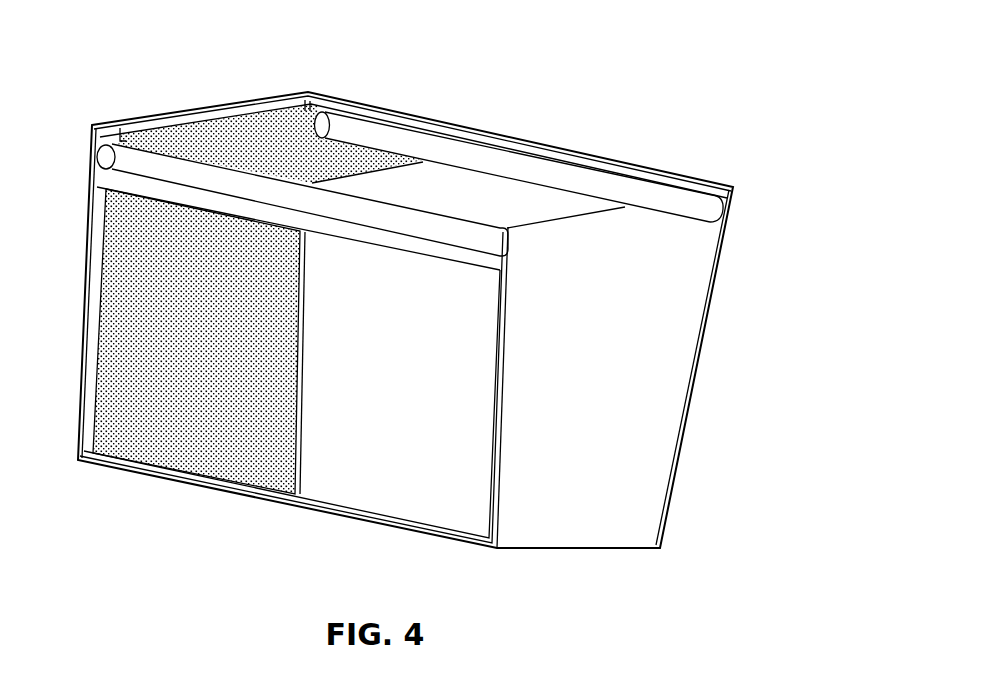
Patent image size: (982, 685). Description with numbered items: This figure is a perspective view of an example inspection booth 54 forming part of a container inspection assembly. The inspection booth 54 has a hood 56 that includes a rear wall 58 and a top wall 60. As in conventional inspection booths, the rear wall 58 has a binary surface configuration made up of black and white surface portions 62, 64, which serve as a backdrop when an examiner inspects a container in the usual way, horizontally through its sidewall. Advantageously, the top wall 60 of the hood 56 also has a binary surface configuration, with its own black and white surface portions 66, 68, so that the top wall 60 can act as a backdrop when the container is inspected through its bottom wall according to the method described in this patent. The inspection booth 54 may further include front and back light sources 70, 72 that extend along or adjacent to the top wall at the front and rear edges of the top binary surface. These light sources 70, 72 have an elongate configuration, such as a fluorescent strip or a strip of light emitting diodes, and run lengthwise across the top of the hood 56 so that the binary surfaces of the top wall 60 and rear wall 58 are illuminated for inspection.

The inspection booth 54 is at (767, 62).
The hood 56 is at (648, 362).
The rear wall 58 is at (432, 502).
The top wall 60 is at (268, 107).
The black surface portion 62 is at (230, 462).
The white surface portion 64 is at (340, 485).
The black surface portion 66 is at (363, 160).
The white surface portion 68 is at (503, 197).
The front light source 70 is at (667, 198).
The back light source 72 is at (122, 160).